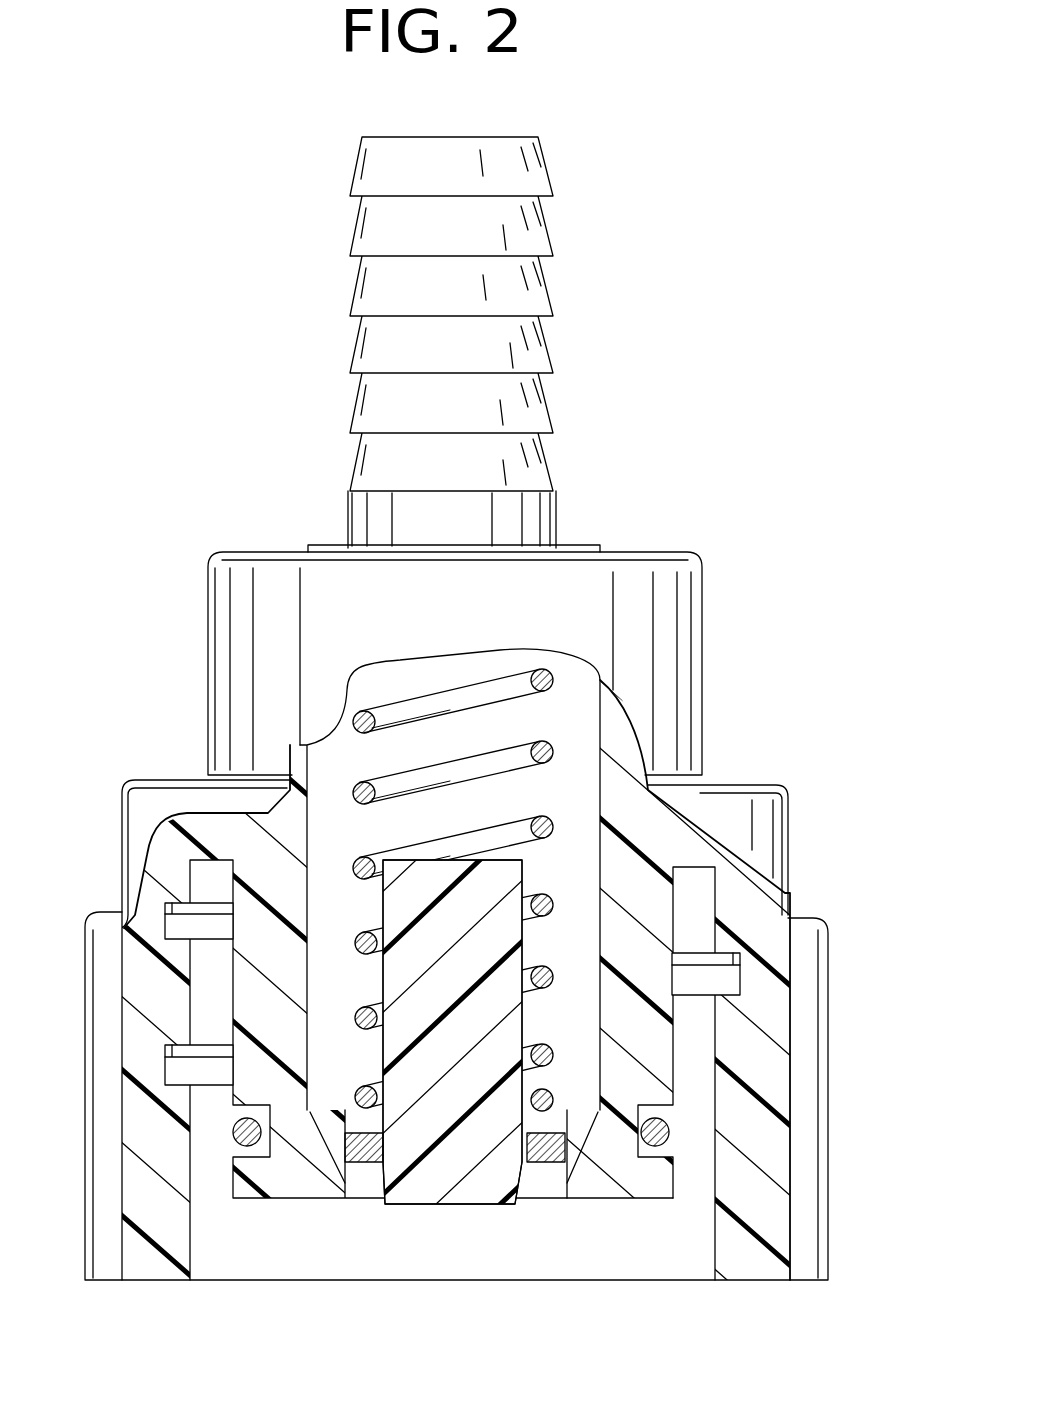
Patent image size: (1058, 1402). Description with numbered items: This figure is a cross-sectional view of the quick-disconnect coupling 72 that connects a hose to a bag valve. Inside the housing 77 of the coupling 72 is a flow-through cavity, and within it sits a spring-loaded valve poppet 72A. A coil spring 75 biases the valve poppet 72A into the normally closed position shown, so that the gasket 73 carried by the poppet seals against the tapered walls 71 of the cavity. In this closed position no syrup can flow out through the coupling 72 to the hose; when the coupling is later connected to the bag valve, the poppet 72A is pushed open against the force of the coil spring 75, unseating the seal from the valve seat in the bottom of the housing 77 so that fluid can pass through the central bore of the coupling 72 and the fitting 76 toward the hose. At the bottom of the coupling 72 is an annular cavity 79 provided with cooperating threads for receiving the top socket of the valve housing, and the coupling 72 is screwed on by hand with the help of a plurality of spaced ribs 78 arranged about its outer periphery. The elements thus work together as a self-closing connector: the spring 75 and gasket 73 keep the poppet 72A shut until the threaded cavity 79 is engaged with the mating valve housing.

The tapered walls 71 is at (333, 1160).
The quick-disconnect coupling 72 is at (182, 590).
The valve poppet 72A is at (478, 1185).
The gasket 73 is at (575, 1165).
The coil spring 75 is at (428, 1016).
The fitting 76 is at (540, 242).
The housing 77 is at (665, 642).
The spaced ribs 78 is at (828, 992).
The annular cavity 79 is at (688, 1085).